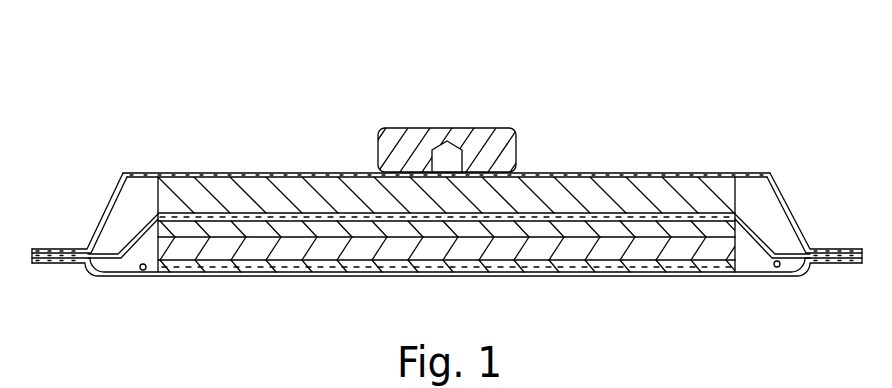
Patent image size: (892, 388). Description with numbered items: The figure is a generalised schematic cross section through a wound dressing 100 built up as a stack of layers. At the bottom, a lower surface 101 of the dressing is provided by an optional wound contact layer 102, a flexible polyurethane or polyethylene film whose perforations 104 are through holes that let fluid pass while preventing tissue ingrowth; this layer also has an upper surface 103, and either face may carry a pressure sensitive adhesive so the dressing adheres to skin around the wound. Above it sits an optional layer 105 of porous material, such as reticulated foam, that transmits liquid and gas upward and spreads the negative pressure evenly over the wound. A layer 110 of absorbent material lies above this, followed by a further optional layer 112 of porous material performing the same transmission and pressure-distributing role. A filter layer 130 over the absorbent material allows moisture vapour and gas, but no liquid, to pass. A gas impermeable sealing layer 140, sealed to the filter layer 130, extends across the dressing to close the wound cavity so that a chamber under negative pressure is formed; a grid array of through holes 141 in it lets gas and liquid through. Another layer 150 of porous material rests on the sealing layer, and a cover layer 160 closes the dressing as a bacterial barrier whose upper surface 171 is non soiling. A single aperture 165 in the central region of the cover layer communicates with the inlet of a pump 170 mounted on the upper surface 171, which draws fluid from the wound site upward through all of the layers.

The wound dressing 100 is at (188, 71).
The lower surface 101 is at (718, 276).
The wound contact layer 102 is at (127, 273).
The upper surface 103 is at (256, 270).
The perforations 104 is at (328, 273).
The layer of porous material 105 is at (503, 265).
The layer of absorbent material 110 is at (627, 263).
The further layer of porous material 112 is at (715, 223).
The filter layer 130 is at (658, 213).
The gas impermeable sealing layer 140 is at (612, 212).
The through holes 141 is at (238, 217).
The layer of porous material 150 is at (298, 198).
The cover layer 160 is at (333, 173).
The aperture 165 is at (462, 168).
The pump 170 is at (392, 140).
The upper surface 171 is at (153, 173).